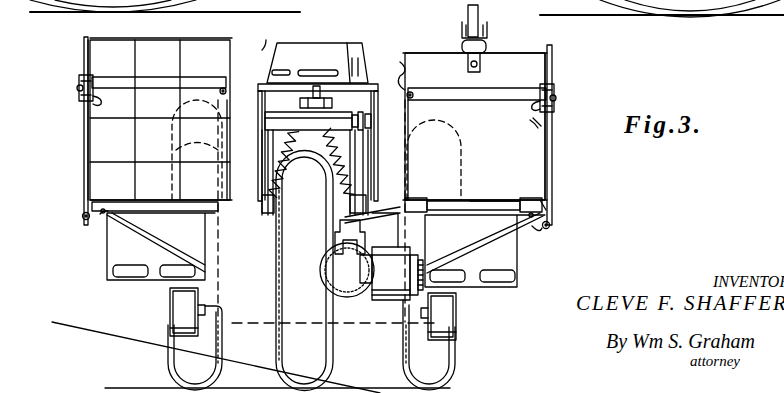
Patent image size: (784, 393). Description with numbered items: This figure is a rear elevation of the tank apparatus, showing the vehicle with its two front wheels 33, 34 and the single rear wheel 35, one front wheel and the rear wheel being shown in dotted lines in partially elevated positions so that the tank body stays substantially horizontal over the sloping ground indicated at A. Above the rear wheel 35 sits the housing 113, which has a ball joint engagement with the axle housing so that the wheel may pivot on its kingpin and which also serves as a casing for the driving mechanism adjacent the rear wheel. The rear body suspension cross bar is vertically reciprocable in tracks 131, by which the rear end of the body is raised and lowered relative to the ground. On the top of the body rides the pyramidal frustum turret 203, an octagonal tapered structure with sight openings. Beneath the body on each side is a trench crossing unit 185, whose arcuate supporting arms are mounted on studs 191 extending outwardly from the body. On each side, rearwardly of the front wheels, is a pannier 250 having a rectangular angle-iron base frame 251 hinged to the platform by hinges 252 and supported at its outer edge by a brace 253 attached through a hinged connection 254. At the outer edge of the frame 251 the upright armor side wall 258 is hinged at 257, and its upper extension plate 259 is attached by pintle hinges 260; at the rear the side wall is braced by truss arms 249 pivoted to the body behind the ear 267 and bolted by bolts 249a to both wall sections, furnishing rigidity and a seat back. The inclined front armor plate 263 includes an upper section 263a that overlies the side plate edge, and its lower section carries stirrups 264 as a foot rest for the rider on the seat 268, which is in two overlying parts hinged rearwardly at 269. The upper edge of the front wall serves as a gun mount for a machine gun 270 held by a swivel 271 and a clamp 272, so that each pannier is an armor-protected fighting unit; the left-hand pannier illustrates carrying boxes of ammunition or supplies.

The front wheel 33 is at (178, 363).
The front wheel 34 is at (445, 368).
The rear wheel 35 is at (293, 287).
The housing 113 is at (335, 290).
The tracks 131 is at (265, 236).
The trench crossing unit 185 is at (185, 309).
The studs 191 is at (221, 322).
The pyramidal frustum turret 203 is at (320, 48).
The truss arms 249 is at (172, 70).
The bolts 249a is at (95, 102).
The pannier 250 is at (121, 37).
The base frame 251 is at (125, 205).
The hinges 252 is at (213, 218).
The brace 253 is at (135, 233).
The hinged connection 254 is at (103, 215).
The hinges 257 is at (82, 216).
The side wall 258 is at (84, 138).
The extension plate 259 is at (84, 54).
The pintle hinges 260 is at (78, 88).
The front armor plate 263 is at (510, 136).
The upper section 263a is at (536, 124).
The stirrups 264 is at (135, 271).
The ear 267 is at (268, 48).
The seat 268 is at (478, 200).
The hinge 269 is at (540, 198).
The machine gun 270 is at (468, 15).
The swivel 271 is at (462, 46).
The clamp 272 is at (468, 66).